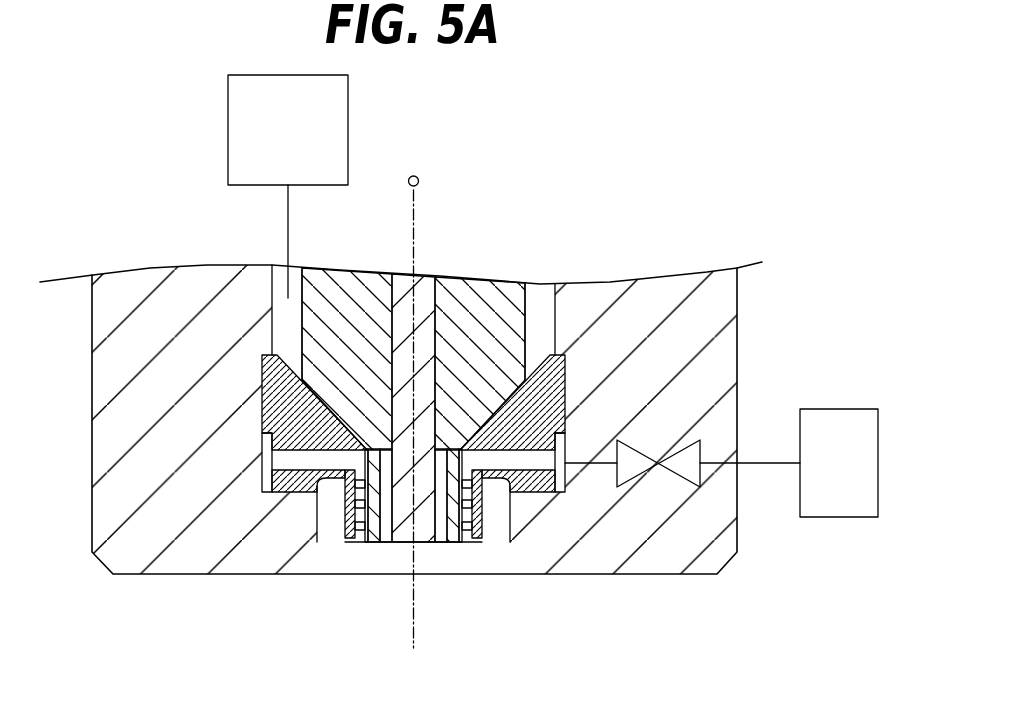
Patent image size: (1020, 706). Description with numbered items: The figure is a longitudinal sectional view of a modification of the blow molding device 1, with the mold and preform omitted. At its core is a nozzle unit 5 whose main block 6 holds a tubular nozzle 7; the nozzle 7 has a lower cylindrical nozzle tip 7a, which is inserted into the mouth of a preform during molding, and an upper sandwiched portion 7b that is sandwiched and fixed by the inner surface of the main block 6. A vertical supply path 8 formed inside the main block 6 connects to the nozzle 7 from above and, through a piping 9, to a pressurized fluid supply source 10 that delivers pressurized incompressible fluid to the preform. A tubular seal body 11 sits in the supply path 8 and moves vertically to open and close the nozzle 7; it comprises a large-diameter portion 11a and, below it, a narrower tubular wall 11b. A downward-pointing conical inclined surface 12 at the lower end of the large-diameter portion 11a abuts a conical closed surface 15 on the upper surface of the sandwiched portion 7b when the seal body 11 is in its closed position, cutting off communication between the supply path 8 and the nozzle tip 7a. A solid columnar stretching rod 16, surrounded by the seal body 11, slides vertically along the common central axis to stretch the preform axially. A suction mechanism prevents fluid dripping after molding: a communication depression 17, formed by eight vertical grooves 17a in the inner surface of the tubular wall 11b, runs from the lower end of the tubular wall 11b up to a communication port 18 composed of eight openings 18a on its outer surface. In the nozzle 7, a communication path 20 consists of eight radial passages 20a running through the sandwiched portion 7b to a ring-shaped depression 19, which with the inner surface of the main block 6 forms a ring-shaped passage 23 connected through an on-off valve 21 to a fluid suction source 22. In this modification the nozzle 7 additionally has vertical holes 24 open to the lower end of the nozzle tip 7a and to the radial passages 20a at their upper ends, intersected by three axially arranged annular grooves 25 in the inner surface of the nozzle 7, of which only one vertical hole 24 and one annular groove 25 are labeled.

The blow molding device 1 is at (784, 162).
The nozzle unit 5 is at (438, 418).
The main block 6 is at (713, 369).
The nozzle 7 is at (549, 471).
The nozzle tip 7a is at (485, 499).
The sandwiched portion 7b is at (565, 362).
The supply path 8 is at (287, 325).
The piping 9 is at (283, 228).
The pressurized fluid supply source 10 is at (228, 131).
The seal body 11 is at (441, 417).
The large-diameter portion 11a is at (357, 351).
The tubular wall 11b is at (368, 519).
The inclined surface 12 is at (288, 415).
The closed surface 15 is at (322, 397).
The stretching rod 16 is at (437, 332).
The communication depression 17 is at (413, 558).
The vertical groove 17a is at (434, 516).
The communication port 18 is at (480, 366).
The opening 18a is at (463, 456).
The ring-shaped depression 19 is at (558, 497).
The communication path 20 is at (525, 515).
The radial passage 20a is at (529, 476).
The on-off valve 21 is at (642, 478).
The fluid suction source 22 is at (838, 518).
The ring-shaped passage 23 is at (568, 486).
The vertical hole 24 is at (479, 529).
The annular groove 25 is at (460, 486).